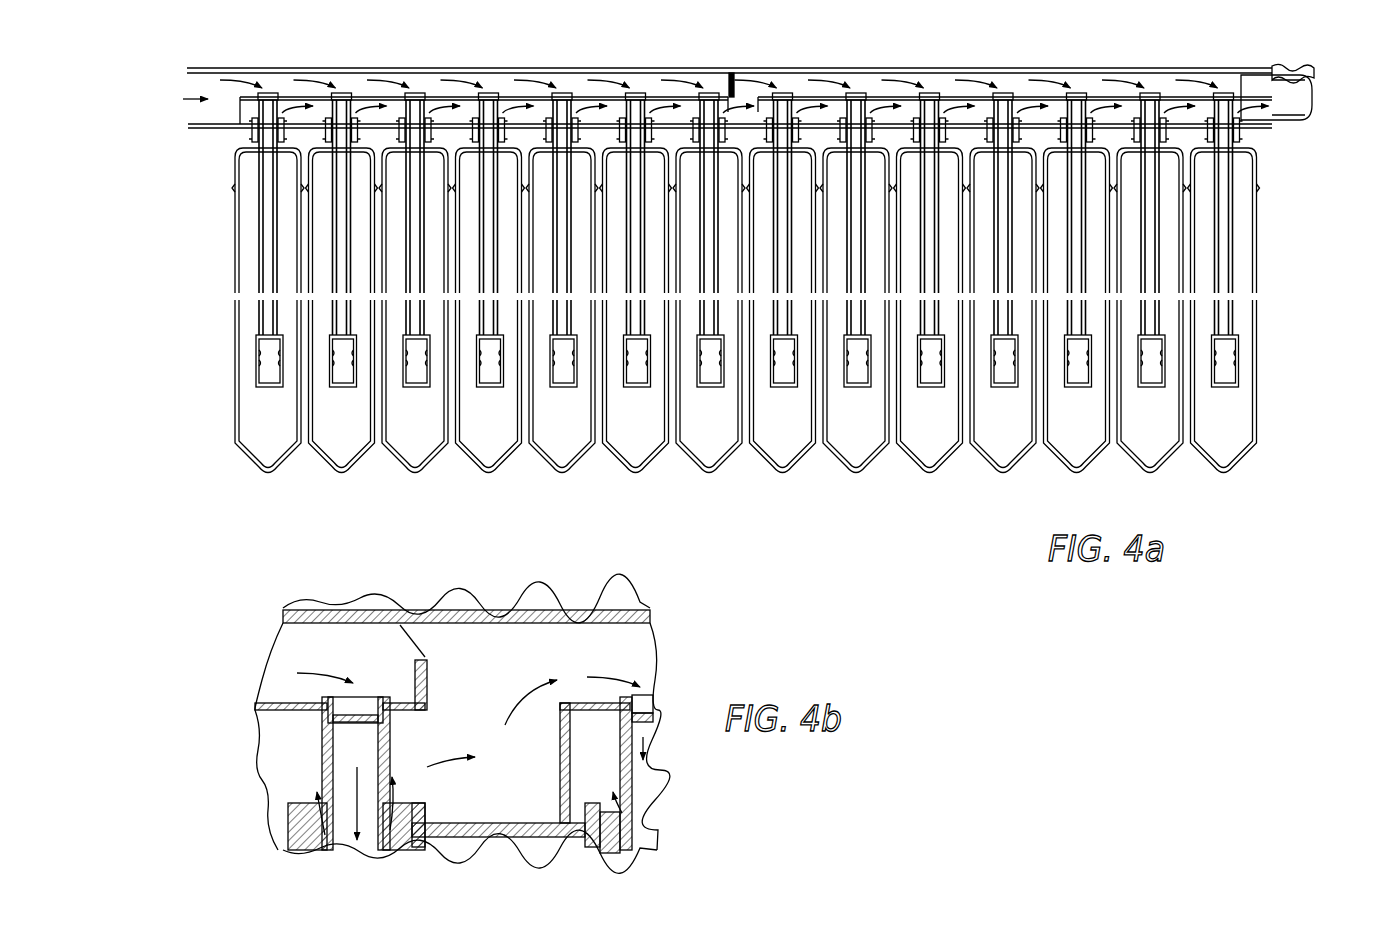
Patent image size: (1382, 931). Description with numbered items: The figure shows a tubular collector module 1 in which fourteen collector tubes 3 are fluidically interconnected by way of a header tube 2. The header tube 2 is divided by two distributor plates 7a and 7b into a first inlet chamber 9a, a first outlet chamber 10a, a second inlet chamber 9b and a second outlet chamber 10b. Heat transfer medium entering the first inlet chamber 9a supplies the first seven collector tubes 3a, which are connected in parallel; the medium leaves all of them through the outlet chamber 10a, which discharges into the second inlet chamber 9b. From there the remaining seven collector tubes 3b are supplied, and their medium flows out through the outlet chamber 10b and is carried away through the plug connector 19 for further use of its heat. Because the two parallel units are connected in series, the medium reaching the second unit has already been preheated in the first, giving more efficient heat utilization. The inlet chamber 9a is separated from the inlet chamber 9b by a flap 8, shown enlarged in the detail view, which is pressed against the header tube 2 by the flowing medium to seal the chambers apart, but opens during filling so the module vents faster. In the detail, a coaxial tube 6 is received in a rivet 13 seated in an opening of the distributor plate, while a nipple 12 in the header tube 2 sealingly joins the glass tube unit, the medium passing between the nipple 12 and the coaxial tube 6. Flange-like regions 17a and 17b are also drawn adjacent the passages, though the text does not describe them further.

In FIG. 4a, the tubular collector module 1 is at (1080, 38).
In FIG. 4a, the header tube 2 is at (545, 70).
In FIG. 4b, the header tube 2 is at (532, 615).
In FIG. 4a, the collector tubes 3 is at (774, 290).
In FIG. 4a, the collector tubes 3a is at (293, 450).
In FIG. 4a, the collector tubes 3b is at (807, 450).
In FIG. 4b, the coaxial tube 6 is at (327, 777).
In FIG. 4a, the distributor plate 7a is at (285, 97).
In FIG. 4a, the distributor plate 7b is at (1025, 97).
In FIG. 4a, the flap 8 is at (735, 70).
In FIG. 4b, the flap 8 is at (432, 650).
In FIG. 4a, the inlet chamber 9a is at (365, 78).
In FIG. 4b, the inlet chamber 9a is at (318, 633).
In FIG. 4a, the inlet chamber 9b is at (810, 78).
In FIG. 4b, the inlet chamber 9b is at (597, 640).
In FIG. 4a, the outlet chamber 10a is at (470, 103).
In FIG. 4b, the outlet chamber 10a is at (300, 715).
In FIG. 4a, the outlet chamber 10b is at (908, 103).
In FIG. 4b, the outlet chamber 10b is at (613, 772).
In FIG. 4b, the nipple 12 is at (630, 843).
In FIG. 4b, the rivet 13 is at (318, 730).
In FIG. 4b, the flange 17a is at (258, 712).
In FIG. 4b, the flange 17b is at (630, 700).
In FIG. 4a, the plug connector 19 is at (1312, 118).